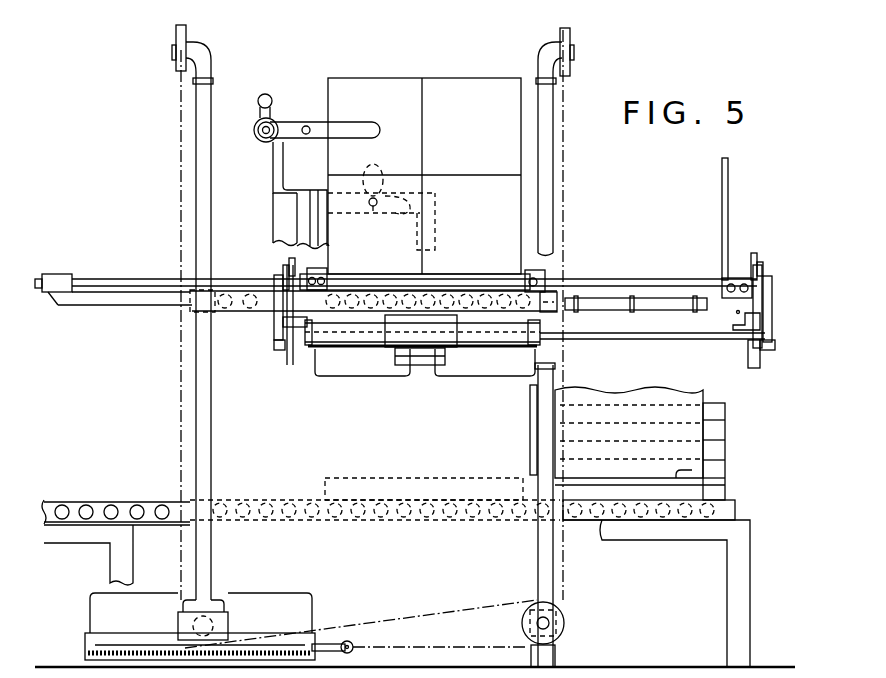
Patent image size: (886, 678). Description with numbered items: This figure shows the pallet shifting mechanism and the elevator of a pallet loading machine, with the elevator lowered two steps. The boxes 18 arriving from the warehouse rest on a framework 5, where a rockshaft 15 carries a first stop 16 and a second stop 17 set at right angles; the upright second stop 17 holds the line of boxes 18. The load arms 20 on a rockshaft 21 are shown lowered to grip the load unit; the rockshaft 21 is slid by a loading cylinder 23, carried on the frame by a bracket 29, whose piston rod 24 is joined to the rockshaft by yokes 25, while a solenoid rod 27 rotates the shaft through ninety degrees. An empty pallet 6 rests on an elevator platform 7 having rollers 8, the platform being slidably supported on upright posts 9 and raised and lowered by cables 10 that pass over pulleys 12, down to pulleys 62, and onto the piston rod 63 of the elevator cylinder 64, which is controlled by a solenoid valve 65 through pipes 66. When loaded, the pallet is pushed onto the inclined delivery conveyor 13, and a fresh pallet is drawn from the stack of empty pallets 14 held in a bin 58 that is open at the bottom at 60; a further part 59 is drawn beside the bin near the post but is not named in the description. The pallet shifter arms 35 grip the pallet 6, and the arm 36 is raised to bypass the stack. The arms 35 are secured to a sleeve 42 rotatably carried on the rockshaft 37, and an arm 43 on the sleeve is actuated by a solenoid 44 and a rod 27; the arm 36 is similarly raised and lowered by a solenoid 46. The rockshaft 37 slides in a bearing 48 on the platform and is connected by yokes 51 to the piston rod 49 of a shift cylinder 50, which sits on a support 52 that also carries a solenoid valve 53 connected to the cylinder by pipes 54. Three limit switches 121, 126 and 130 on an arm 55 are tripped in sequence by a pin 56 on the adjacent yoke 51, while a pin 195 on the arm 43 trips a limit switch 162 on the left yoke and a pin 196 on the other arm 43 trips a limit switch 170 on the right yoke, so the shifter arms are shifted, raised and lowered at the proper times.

The framework 5 is at (318, 212).
The pallet 6 is at (448, 283).
The elevator platform 7 is at (200, 308).
The rollers 8 is at (226, 312).
The upright posts 9 is at (548, 166).
The cables 10 is at (565, 190).
The pulleys 12 is at (187, 42).
The inclined delivery conveyor 13 is at (78, 500).
The stack of empty pallets 14 is at (727, 449).
The rockshaft 15 is at (372, 208).
The first stop 16 is at (404, 216).
The second stop 17 is at (375, 168).
The boxes 18 is at (424, 176).
The load arms 20 is at (354, 121).
The rockshaft 21 is at (306, 136).
The loading cylinder 23 is at (254, 125).
The piston rod 24 is at (273, 117).
The yokes 25 is at (270, 150).
The rod 27 is at (287, 272).
The bracket 29 is at (280, 230).
The pallet shifter arms 35 is at (315, 268).
The pallet shifter arm 36 is at (729, 170).
The rockshaft 37 is at (414, 273).
The sleeve 42 is at (486, 274).
The arm 43 is at (288, 270).
The solenoid 44 is at (281, 345).
The solenoid 46 is at (762, 366).
The bearing 48 is at (58, 274).
The piston rod 49 is at (655, 340).
The shift cylinder 50 is at (483, 346).
The yokes 51 is at (279, 342).
The support 52 is at (421, 330).
The solenoid valve 53 is at (420, 366).
The pipes 54 is at (342, 377).
The arm 55 is at (655, 297).
The pin 56 is at (738, 324).
The bin 58 is at (645, 390).
The guide plate 59 is at (534, 478).
The bottom opening 60 is at (693, 472).
The pulleys 62 is at (220, 600).
The piston rod 63 is at (343, 642).
The elevator cylinder 64 is at (200, 637).
The solenoid valve 65 is at (228, 620).
The pipes 66 is at (306, 594).
The limit switch 121 is at (695, 312).
The limit switch 126 is at (632, 312).
The limit switch 130 is at (576, 312).
The limit switch 162 is at (290, 326).
The limit switch 170 is at (740, 313).
The pin 195 is at (300, 355).
The pin 196 is at (718, 300).